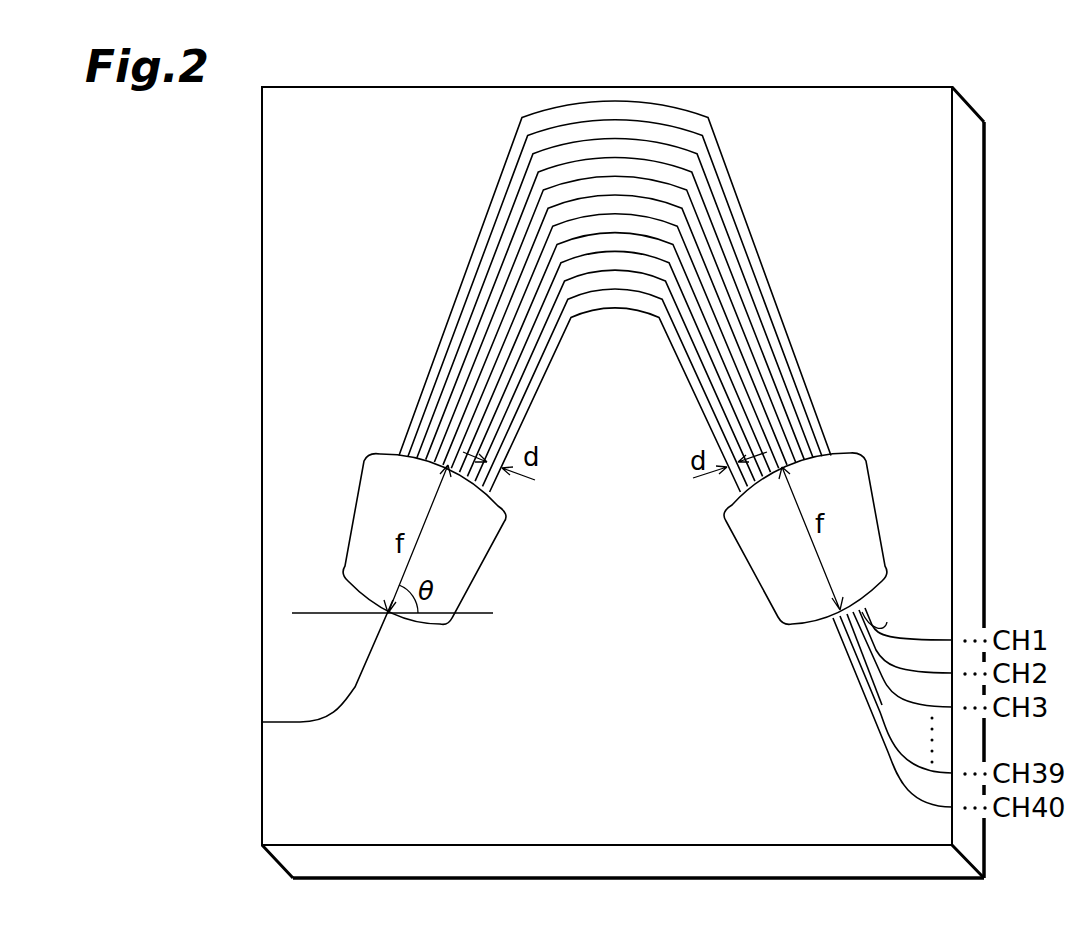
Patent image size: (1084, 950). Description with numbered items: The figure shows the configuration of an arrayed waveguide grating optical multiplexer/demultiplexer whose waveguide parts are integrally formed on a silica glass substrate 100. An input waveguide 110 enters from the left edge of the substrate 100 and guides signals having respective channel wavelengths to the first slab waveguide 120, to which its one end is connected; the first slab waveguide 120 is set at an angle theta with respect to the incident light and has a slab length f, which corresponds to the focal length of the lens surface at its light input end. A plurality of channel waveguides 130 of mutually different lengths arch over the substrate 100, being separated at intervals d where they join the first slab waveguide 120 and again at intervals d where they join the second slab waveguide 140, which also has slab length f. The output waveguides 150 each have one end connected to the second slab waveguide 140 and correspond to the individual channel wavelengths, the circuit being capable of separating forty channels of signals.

The silica glass substrate 100 is at (913, 230).
The input waveguide 110 is at (360, 686).
The first slab waveguide 120 is at (473, 571).
The channel waveguides 130 is at (700, 416).
The second slab waveguide 140 is at (870, 490).
The output waveguides 150 is at (826, 632).